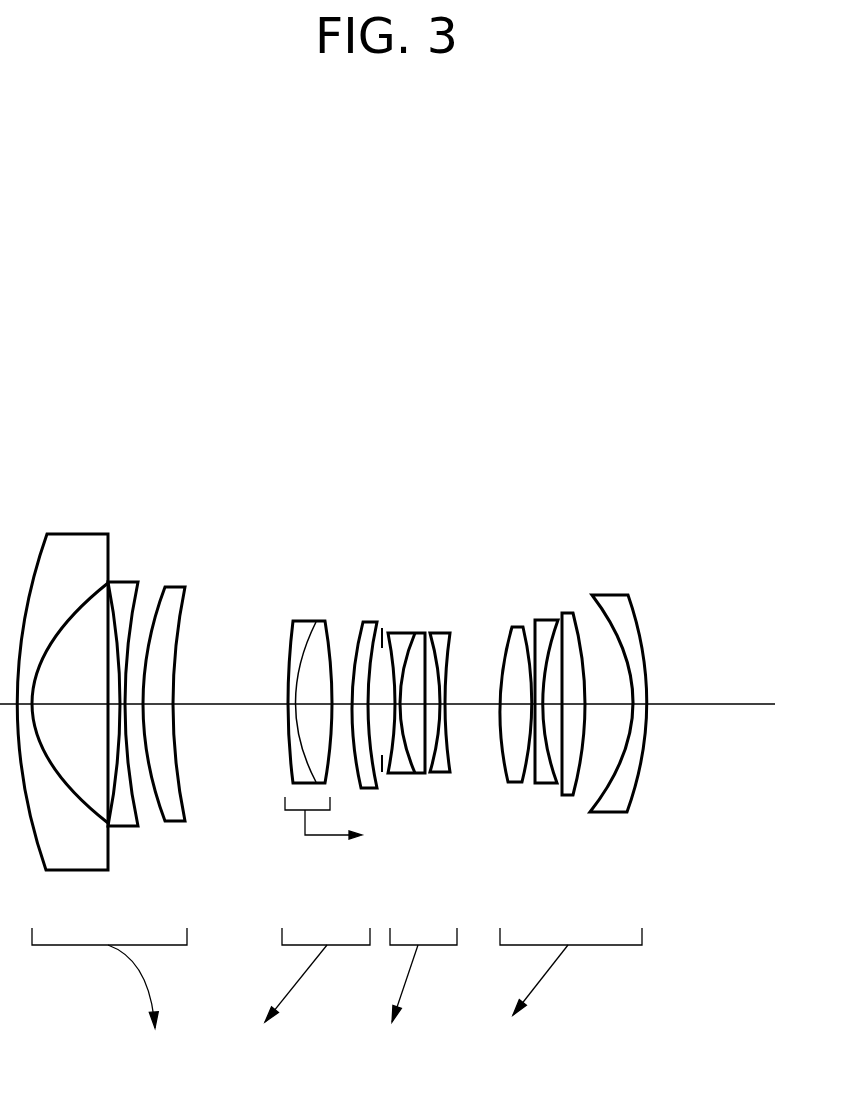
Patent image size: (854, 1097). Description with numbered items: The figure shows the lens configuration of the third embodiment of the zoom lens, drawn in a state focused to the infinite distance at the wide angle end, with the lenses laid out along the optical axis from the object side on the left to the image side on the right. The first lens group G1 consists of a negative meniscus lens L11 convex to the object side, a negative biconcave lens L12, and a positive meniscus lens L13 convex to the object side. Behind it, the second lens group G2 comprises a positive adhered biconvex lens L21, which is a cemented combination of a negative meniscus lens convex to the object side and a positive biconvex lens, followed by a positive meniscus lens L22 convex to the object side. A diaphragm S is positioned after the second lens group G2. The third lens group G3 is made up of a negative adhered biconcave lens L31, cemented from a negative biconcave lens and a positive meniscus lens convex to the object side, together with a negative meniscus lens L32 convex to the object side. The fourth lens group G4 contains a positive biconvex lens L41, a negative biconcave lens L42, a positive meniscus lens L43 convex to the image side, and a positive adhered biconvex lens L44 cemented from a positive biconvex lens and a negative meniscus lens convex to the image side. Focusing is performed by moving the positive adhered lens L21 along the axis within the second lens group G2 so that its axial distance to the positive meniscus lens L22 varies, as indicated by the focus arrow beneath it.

The first lens group G1 is at (178, 443).
The second lens group G2 is at (385, 443).
The third lens group G3 is at (485, 443).
The fourth lens group G4 is at (655, 441).
The negative meniscus lens L11 is at (78, 545).
The negative biconcave lens L12 is at (122, 590).
The positive meniscus lens L13 is at (172, 597).
The positive adhered biconvex lens L21 is at (333, 594).
The positive meniscus lens L22 is at (367, 620).
The diaphragm S is at (385, 620).
The negative adhered biconcave lens L31 is at (433, 594).
The negative meniscus lens L32 is at (443, 638).
The positive biconvex lens L41 is at (517, 633).
The negative biconcave lens L42 is at (547, 620).
The positive meniscus lens L43 is at (570, 610).
The positive adhered biconvex lens L44 is at (637, 592).